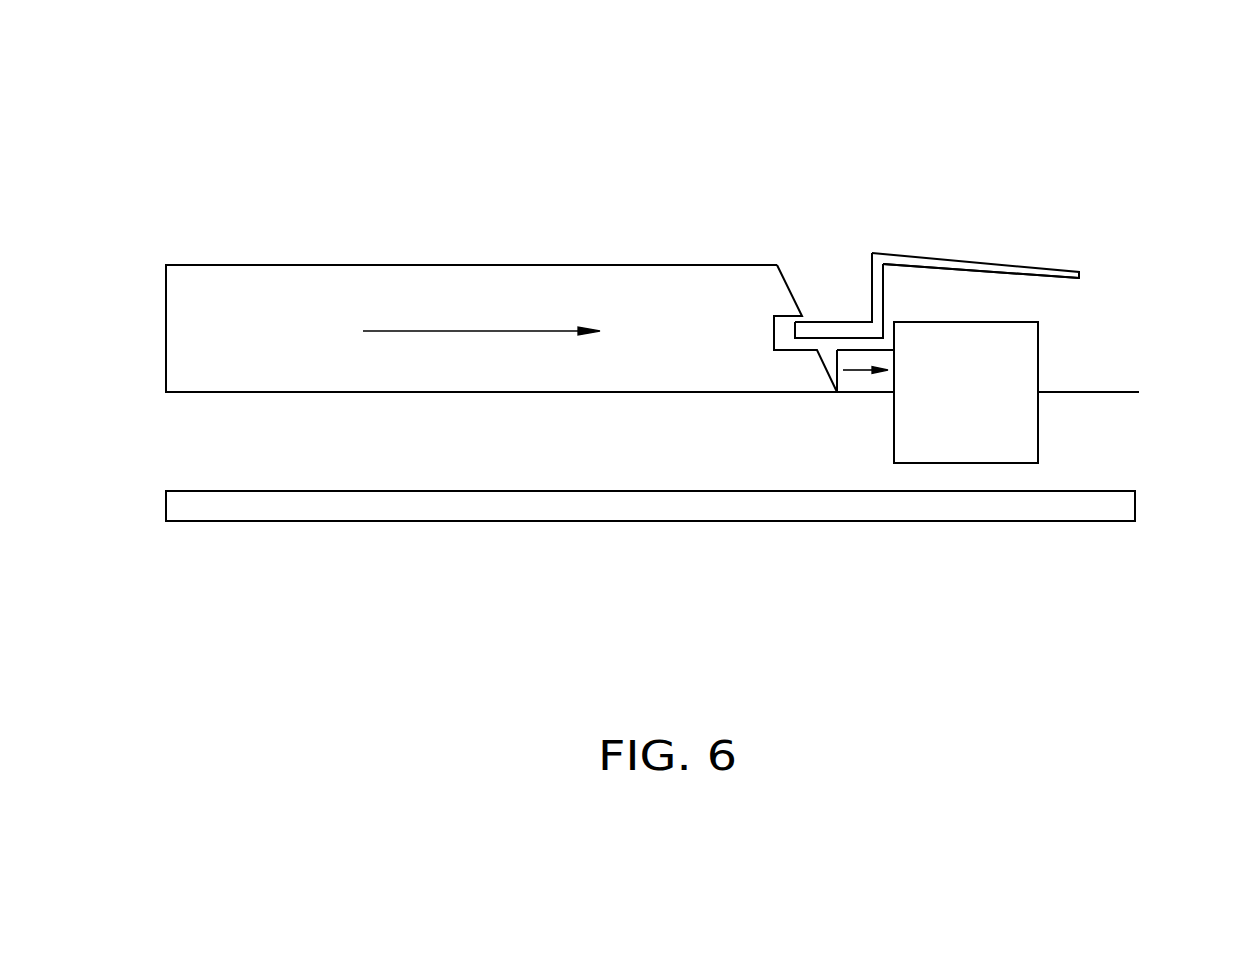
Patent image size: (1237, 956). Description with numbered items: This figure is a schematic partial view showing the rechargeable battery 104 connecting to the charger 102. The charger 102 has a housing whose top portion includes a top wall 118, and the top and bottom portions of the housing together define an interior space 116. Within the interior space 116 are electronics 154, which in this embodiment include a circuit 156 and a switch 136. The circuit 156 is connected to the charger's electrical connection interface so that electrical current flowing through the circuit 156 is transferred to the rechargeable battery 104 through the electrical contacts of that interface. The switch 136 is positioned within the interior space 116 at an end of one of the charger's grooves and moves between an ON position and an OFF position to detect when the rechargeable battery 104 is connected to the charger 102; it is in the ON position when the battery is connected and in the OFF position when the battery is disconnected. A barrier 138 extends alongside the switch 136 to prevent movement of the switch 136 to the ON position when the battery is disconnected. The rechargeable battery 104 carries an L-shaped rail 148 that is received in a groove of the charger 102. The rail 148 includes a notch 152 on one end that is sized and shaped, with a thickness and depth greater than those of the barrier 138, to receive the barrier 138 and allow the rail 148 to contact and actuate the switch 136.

The charger 102 is at (1102, 548).
The rechargeable battery 104 is at (305, 228).
The interior space 116 is at (1007, 295).
The top wall 118 is at (973, 258).
The switch 136 is at (882, 405).
The barrier 138 is at (833, 320).
The rail 148 is at (227, 288).
The notch 152 is at (788, 315).
The electronics 154 is at (1082, 323).
The circuit 156 is at (1088, 393).